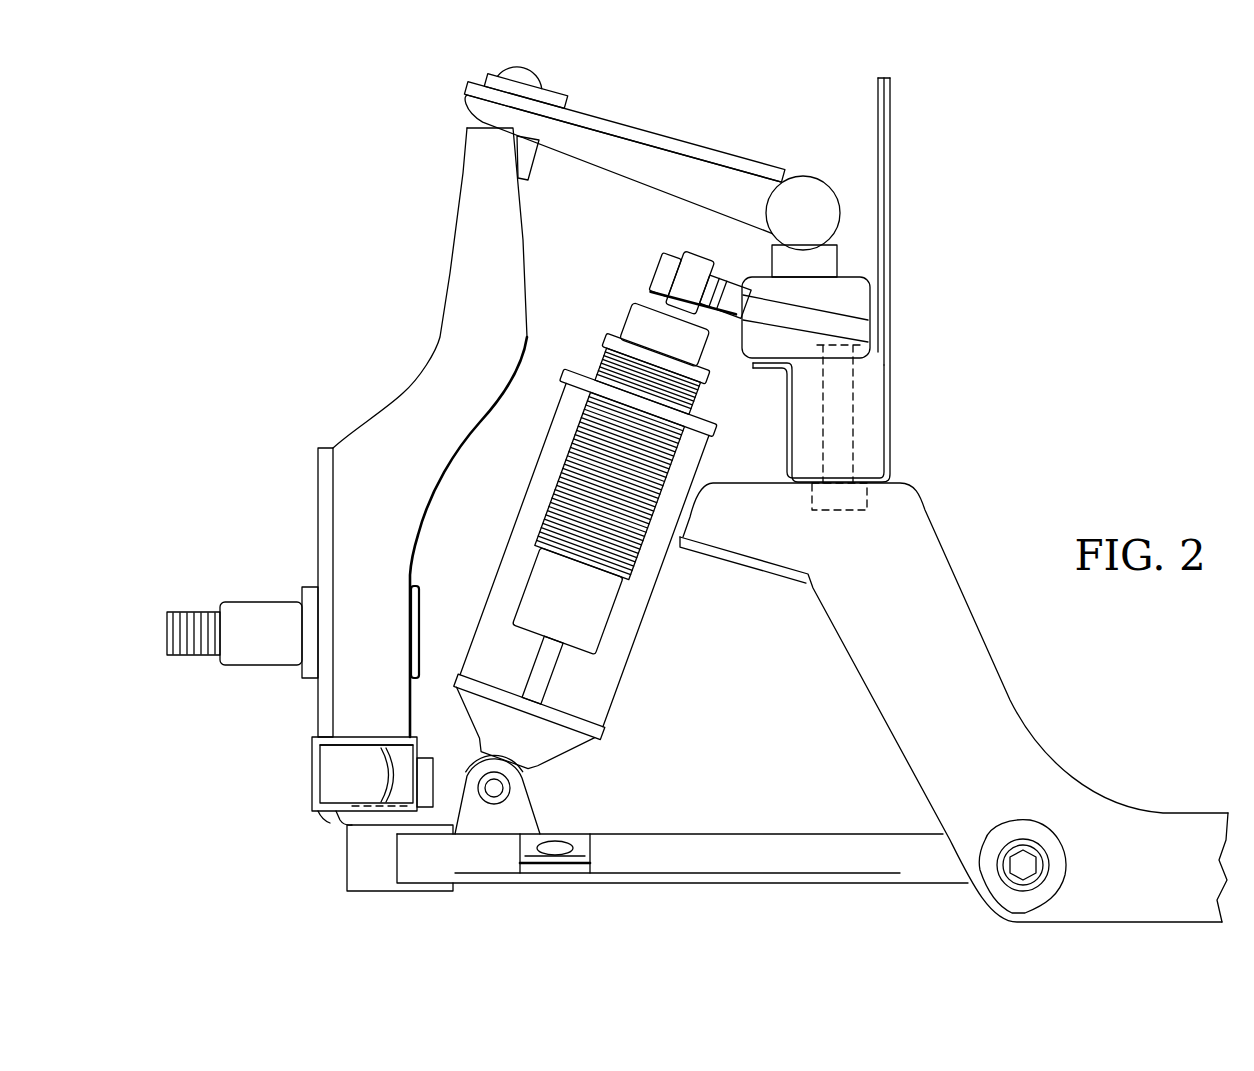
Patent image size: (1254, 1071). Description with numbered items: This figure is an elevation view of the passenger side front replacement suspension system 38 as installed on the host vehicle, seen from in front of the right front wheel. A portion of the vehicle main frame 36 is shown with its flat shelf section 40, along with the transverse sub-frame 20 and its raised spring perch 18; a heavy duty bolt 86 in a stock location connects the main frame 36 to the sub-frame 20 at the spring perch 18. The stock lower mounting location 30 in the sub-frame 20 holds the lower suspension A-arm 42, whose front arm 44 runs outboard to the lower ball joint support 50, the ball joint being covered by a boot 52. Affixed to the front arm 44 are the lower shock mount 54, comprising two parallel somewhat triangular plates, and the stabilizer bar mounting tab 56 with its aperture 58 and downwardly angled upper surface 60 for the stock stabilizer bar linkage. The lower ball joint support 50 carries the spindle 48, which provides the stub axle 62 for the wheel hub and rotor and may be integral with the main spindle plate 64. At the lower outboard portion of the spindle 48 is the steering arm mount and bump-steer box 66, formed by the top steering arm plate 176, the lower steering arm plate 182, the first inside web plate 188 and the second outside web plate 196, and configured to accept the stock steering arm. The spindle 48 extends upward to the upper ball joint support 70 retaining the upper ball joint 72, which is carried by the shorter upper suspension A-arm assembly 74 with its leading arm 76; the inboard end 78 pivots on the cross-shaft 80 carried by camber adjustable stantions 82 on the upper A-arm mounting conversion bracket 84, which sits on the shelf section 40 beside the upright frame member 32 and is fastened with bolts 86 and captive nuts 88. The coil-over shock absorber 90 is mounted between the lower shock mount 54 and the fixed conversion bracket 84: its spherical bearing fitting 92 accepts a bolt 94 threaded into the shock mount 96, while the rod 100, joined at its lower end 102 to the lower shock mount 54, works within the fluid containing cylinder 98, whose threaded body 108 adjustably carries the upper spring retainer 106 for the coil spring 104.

The raised spring perch 18 is at (930, 518).
The sub-frame 20 is at (1170, 812).
The stock lower mounting location 30 is at (1021, 852).
The upright tube 32 is at (876, 96).
The vehicle main frame 36 is at (880, 405).
The replacement suspension system 38 is at (376, 315).
The flat shelf section 40 is at (760, 372).
The lower suspension A-arm 42 is at (750, 812).
The front arm 44 is at (842, 834).
The spindle 48 is at (458, 219).
The lower ball joint support 50 is at (347, 862).
The boot 52 is at (340, 822).
The lower shock mount 54 is at (520, 808).
The stabilizer bar mounting tab 56 is at (590, 850).
The aperture 58 is at (557, 846).
The upper surface 60 is at (533, 858).
The stub axle 62 is at (300, 600).
The main spindle plate 64 is at (318, 453).
The steering arm mount and bump-steer box 66 is at (288, 745).
The upper ball joint support 70 is at (532, 164).
The upper ball joint 72 is at (522, 70).
The upper suspension A-arm assembly 74 is at (684, 112).
The leading arm 76 is at (590, 130).
The inboard end 78 is at (733, 157).
The cross-shaft 80 is at (805, 184).
The cross-shaft camber adjustable stantion 82 is at (840, 240).
The upper A-arm mounting conversion bracket 84 is at (855, 300).
The bolt 86 is at (853, 432).
The captive nut 88 is at (860, 345).
The coil-over shock absorber 90 is at (672, 585).
The spherical bearing fitting 92 is at (688, 255).
The bolt 94 is at (655, 268).
The shock mount 96 is at (725, 272).
The cylinder 98 is at (630, 308).
The rod 100 is at (520, 660).
The clevis 102 is at (576, 757).
The coil spring 104 is at (636, 650).
The upper spring retainer 106 is at (570, 373).
The threaded body 108 is at (542, 460).
The top steering arm plate 176 is at (360, 737).
The lower steering arm plate 182 is at (323, 814).
The first inside web plate 188 is at (402, 755).
The second outside web plate 196 is at (312, 781).